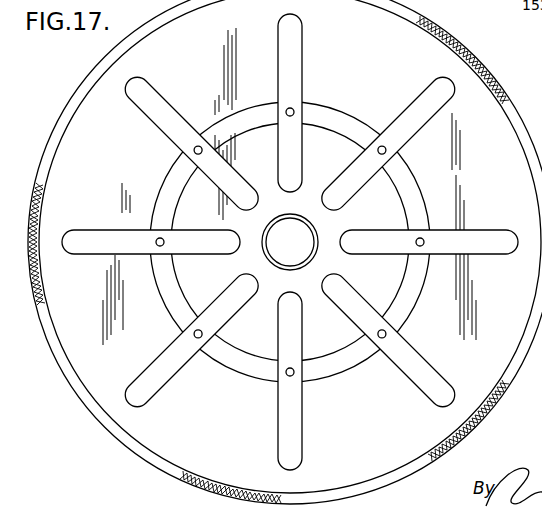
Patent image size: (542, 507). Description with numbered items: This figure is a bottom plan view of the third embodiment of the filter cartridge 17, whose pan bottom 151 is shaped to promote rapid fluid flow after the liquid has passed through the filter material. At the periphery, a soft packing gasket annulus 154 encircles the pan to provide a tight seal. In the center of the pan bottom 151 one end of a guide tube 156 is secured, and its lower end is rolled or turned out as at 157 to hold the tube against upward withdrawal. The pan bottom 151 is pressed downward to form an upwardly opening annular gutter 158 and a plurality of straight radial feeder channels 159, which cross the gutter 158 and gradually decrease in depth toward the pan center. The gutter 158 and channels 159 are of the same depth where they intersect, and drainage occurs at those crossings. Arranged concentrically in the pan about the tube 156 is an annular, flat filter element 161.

The filter cartridge 17 is at (92, 68).
The pan bottom 151 is at (90, 370).
The packing gasket annulus 154 is at (72, 107).
The guide tube 156 is at (277, 246).
The rolled lower end of guide tube 157 is at (315, 258).
The annular gutter 158 is at (352, 130).
The radial feeder channels 159 is at (486, 241).
The annular flat filter element 161 is at (296, 109).